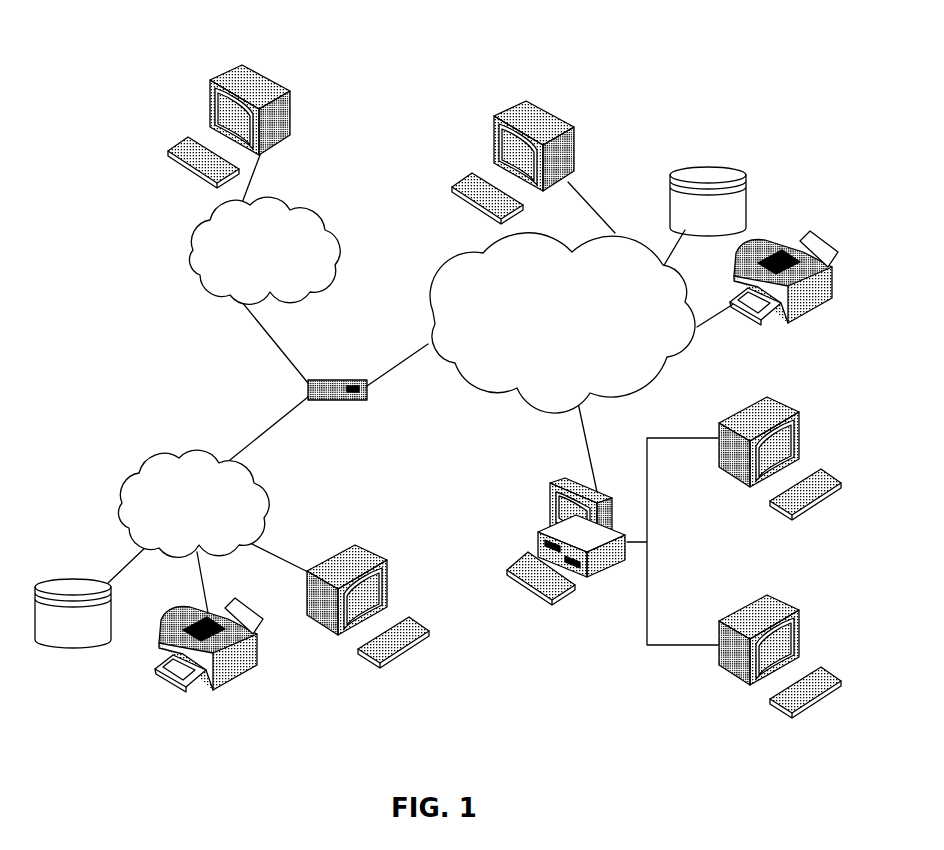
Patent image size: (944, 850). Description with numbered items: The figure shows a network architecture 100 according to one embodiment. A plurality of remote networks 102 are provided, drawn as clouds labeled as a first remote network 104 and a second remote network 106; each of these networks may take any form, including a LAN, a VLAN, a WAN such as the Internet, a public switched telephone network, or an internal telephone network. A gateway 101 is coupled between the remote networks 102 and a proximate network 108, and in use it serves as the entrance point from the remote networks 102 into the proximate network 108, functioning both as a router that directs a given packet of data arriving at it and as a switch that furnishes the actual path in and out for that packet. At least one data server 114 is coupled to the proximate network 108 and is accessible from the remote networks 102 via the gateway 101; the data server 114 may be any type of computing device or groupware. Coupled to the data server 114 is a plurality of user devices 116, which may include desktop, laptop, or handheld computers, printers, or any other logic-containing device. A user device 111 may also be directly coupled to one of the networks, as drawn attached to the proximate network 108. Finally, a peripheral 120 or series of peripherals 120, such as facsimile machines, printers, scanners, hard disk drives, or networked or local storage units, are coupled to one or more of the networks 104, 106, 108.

The network architecture 100 is at (158, 51).
The gateway 101 is at (318, 380).
The remote networks 102 is at (183, 301).
The first remote network 104 is at (130, 480).
The second remote network 106 is at (328, 222).
The proximate network 108 is at (650, 387).
The user device 111 is at (578, 132).
The data server 114 is at (548, 498).
The user devices 116 is at (293, 100).
The peripheral 120 is at (747, 176).